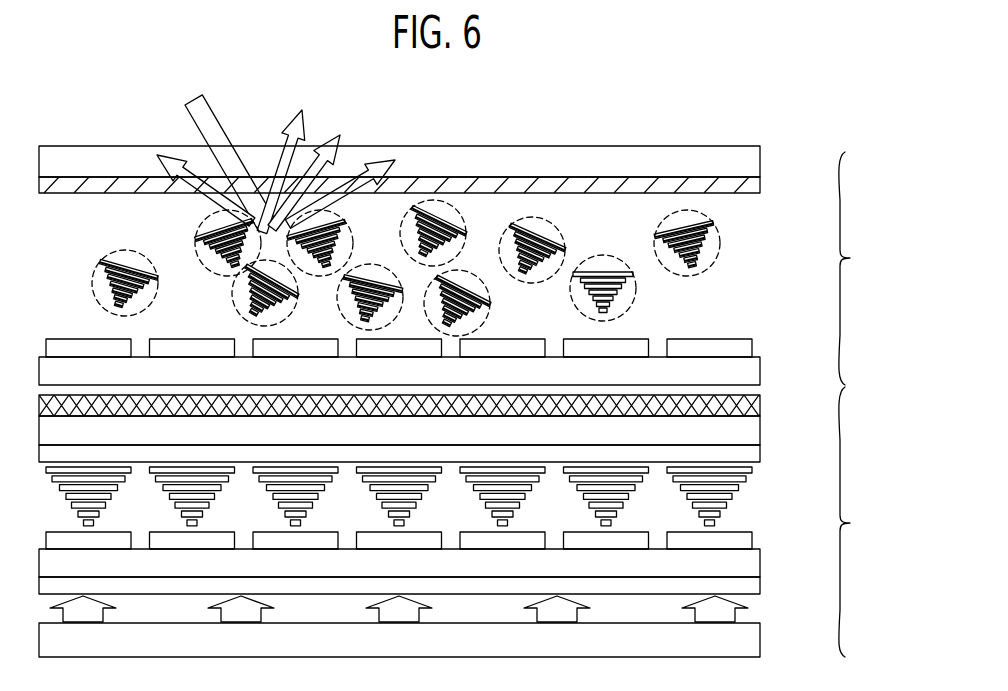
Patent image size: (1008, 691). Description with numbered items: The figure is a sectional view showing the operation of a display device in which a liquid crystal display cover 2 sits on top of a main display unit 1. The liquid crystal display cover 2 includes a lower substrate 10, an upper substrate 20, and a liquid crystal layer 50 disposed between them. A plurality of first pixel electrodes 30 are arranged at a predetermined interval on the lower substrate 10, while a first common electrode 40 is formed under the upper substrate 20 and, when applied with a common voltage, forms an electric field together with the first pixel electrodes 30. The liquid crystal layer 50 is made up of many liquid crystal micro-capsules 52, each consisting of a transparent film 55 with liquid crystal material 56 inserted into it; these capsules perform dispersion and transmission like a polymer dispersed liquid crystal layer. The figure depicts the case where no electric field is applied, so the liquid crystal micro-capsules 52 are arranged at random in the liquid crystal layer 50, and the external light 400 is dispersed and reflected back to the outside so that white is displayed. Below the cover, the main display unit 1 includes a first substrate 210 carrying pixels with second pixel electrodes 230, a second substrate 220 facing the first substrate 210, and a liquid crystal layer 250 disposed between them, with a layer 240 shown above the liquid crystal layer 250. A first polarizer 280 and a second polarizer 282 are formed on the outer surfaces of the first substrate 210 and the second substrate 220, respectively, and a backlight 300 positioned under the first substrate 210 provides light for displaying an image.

The external light 400 is at (214, 106).
The upper substrate 20 is at (760, 163).
The first common electrode 40 is at (760, 187).
The liquid crystal micro-capsule 52 is at (789, 222).
The liquid crystal material 56 is at (713, 225).
The transparent film 55 is at (720, 253).
The liquid crystal layer 50 is at (708, 304).
The liquid crystal display cover 2 is at (853, 268).
The first pixel electrode 30 is at (752, 348).
The lower substrate 10 is at (760, 371).
The second polarizer 282 is at (760, 403).
The second substrate 220 is at (760, 425).
The alignment layer 240 is at (760, 452).
The liquid crystal layer 250 is at (737, 490).
The second pixel electrode 230 is at (752, 541).
The first substrate 210 is at (760, 562).
The first polarizer 280 is at (760, 585).
The backlight 300 is at (760, 638).
The main display unit 1 is at (853, 522).